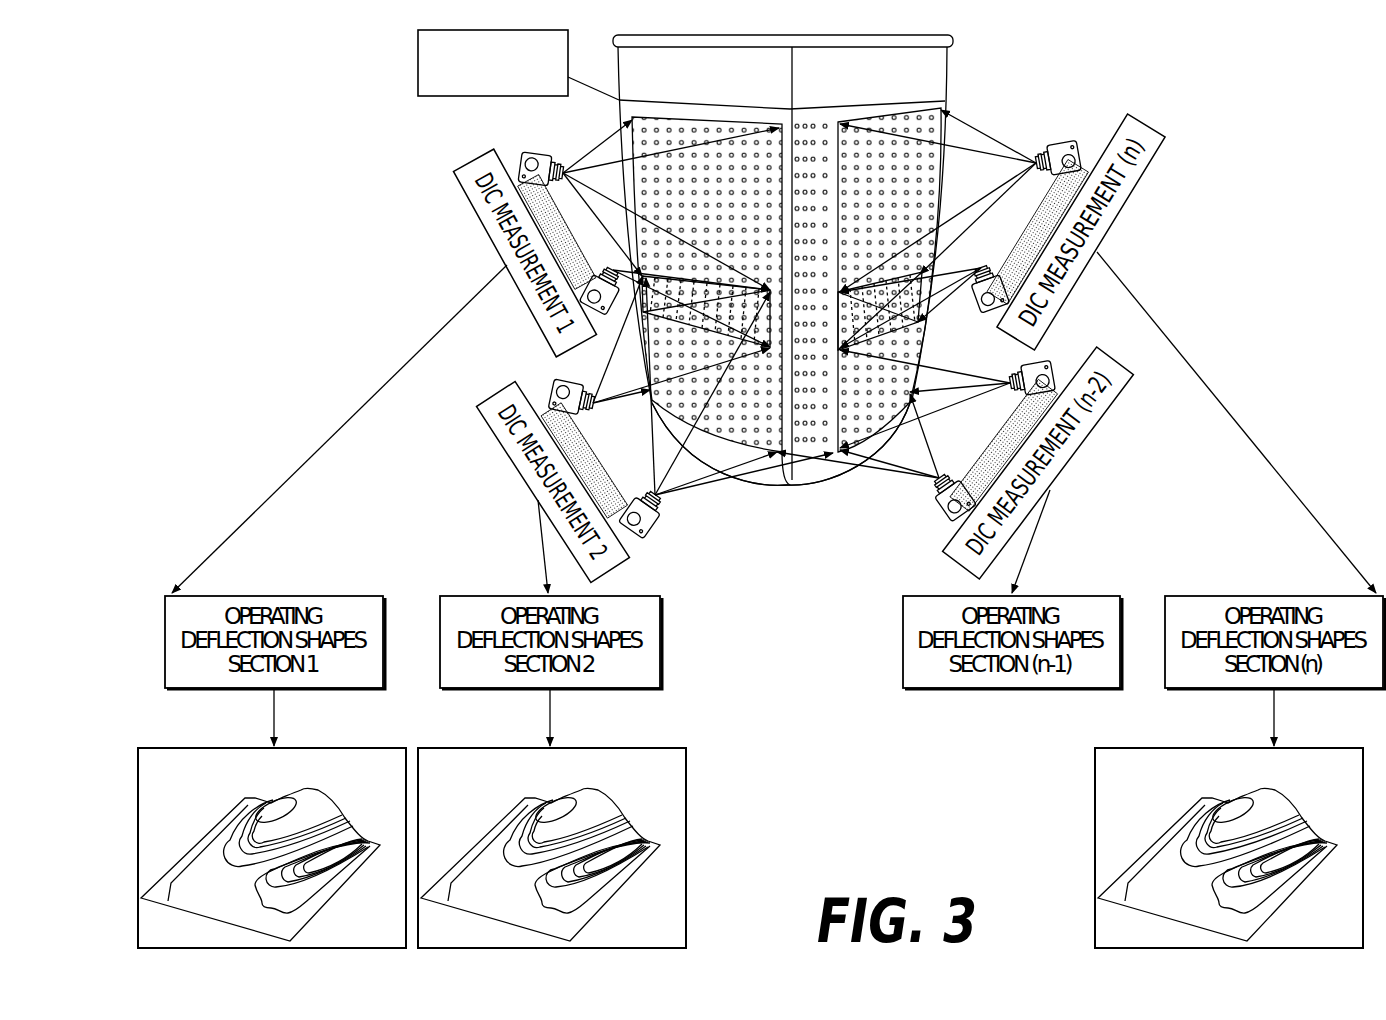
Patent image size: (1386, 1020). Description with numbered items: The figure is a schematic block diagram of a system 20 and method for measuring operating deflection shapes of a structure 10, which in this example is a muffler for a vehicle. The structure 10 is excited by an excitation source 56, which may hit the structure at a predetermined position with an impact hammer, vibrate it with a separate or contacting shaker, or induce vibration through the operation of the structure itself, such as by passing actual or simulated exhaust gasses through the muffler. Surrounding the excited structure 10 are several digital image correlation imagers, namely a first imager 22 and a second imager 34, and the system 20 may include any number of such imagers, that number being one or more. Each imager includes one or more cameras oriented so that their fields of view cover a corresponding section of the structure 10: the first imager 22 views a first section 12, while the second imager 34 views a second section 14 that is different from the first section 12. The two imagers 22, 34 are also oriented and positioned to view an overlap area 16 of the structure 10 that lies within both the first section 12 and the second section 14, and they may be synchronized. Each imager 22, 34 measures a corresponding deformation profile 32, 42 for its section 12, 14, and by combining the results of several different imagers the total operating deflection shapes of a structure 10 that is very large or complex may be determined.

The structure 10 is at (903, 70).
The first section 12 is at (713, 124).
The second section 14 is at (725, 440).
The overlap area 16 is at (700, 267).
The system 20 is at (285, 117).
The first imager 22 is at (517, 153).
The deformation profile 32 is at (318, 801).
The second imager 34 is at (545, 390).
The deformation profile 42 is at (598, 801).
The excitation source 56 is at (418, 62).